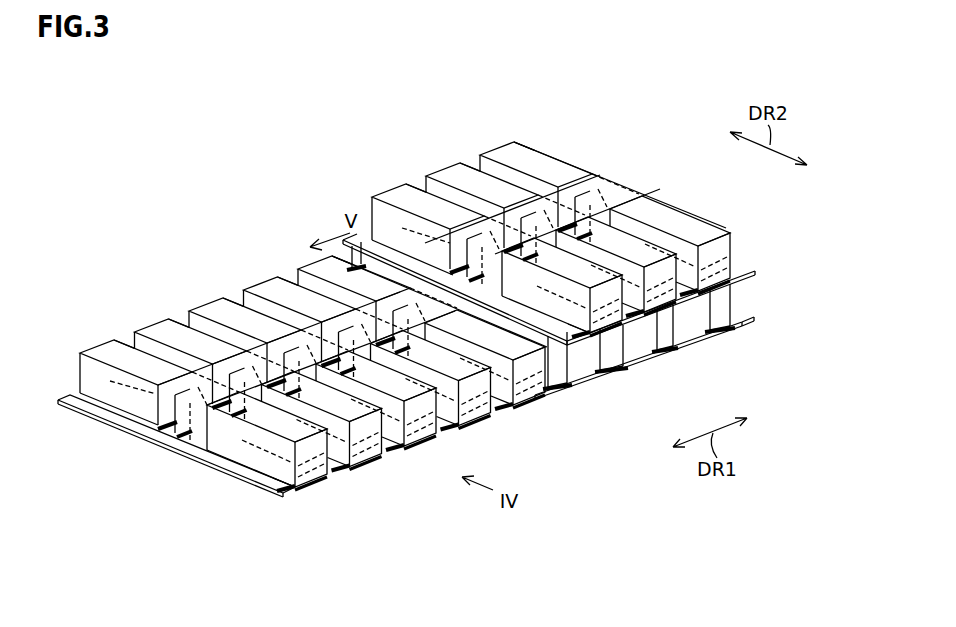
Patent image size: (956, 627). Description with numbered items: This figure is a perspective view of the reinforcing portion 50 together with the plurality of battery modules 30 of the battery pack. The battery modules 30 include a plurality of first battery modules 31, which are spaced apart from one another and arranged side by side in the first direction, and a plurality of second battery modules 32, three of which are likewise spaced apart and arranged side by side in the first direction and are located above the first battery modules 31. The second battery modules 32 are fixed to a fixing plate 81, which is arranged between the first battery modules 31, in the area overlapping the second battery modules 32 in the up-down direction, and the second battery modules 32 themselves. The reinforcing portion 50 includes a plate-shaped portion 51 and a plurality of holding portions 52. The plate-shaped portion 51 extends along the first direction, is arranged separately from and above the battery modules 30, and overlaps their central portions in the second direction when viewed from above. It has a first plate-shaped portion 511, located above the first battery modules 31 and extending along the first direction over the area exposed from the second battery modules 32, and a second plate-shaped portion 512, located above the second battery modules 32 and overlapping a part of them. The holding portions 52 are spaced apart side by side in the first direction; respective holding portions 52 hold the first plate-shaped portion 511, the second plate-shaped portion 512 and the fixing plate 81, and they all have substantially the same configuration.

The battery modules 30 is at (405, 267).
The first battery modules 31 is at (103, 345).
The second battery modules 32 is at (393, 190).
The reinforcing portion 50 is at (128, 466).
The plate-shaped portion 51 is at (420, 219).
The first plate-shaped portion 511 is at (357, 310).
The second plate-shaped portion 512 is at (553, 222).
The holding portions 52 is at (302, 508).
The fixing plate 81 is at (752, 268).